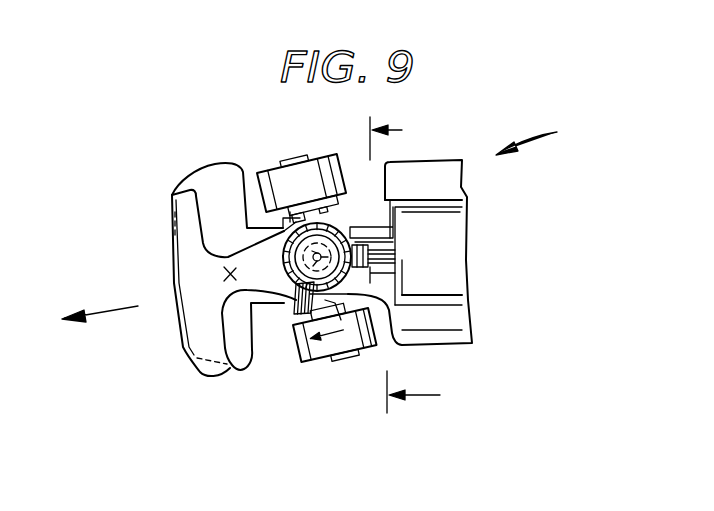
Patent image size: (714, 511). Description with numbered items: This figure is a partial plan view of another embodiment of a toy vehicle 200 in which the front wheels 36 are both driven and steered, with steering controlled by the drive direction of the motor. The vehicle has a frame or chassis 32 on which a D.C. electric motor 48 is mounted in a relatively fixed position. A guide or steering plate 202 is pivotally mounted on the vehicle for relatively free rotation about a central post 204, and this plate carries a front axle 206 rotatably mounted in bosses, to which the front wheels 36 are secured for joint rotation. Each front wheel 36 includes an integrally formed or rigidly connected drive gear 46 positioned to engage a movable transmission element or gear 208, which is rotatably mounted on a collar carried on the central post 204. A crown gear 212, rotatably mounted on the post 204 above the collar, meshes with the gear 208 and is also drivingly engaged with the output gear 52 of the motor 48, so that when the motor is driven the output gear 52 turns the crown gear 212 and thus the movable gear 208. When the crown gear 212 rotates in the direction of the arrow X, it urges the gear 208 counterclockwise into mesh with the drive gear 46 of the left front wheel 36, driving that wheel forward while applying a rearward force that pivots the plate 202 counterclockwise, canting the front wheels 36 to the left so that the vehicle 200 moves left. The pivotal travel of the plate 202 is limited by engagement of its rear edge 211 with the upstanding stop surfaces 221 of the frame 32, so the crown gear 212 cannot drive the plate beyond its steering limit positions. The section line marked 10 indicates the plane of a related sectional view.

The section line 10 is at (405, 264).
The frame or chassis 32 is at (447, 158).
The front wheels 36 is at (314, 166).
The drive gears 46 is at (290, 214).
The D.C. electric motor 48 is at (447, 222).
The output gear 52 is at (368, 244).
The toy vehicle 200 is at (548, 136).
The guide or steering plate 202 is at (190, 262).
The central post 204 is at (348, 225).
The front axle 206 is at (340, 300).
The movable transmission element or gear 208 is at (294, 322).
The rear edge 211 is at (400, 304).
The crown gear 212 is at (342, 292).
The upstanding stop surfaces 221 is at (350, 232).